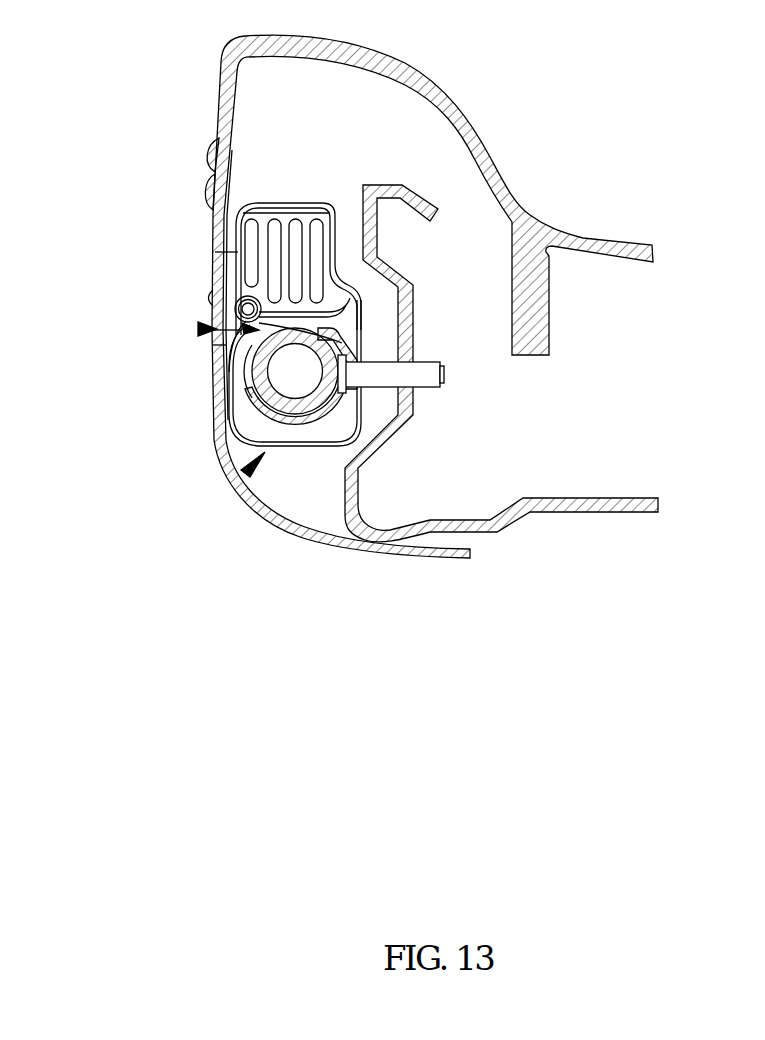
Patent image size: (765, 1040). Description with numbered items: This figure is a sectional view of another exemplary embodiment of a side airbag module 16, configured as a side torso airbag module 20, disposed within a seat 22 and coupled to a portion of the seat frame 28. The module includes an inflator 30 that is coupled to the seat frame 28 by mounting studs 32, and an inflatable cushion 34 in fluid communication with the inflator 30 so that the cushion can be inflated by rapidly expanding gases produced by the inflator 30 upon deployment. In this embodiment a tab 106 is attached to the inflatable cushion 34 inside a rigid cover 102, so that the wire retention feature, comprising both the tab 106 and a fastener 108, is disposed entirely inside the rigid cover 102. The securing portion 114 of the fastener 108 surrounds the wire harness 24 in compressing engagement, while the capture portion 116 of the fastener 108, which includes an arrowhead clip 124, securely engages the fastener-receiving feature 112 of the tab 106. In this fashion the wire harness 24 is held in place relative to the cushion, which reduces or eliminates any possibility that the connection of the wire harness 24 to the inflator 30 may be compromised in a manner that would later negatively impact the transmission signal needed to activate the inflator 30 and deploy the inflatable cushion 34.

The seat 22 is at (473, 127).
The rigid cover 102 is at (220, 153).
The inflatable cushion 34 is at (214, 221).
The securing portion 114 is at (214, 297).
The wire harness 24 is at (235, 309).
The fastener 108 is at (214, 325).
The fastener-receiving feature 112 is at (200, 335).
The capture portion 116 is at (131, 374).
The arrowhead clip 124 is at (214, 347).
The tab 106 is at (210, 343).
The inflator 30 is at (224, 398).
The mounting studs 32 is at (444, 373).
The seat frame 28 is at (415, 418).
The side airbag module 16 is at (295, 348).
The side torso airbag module 20 is at (242, 472).